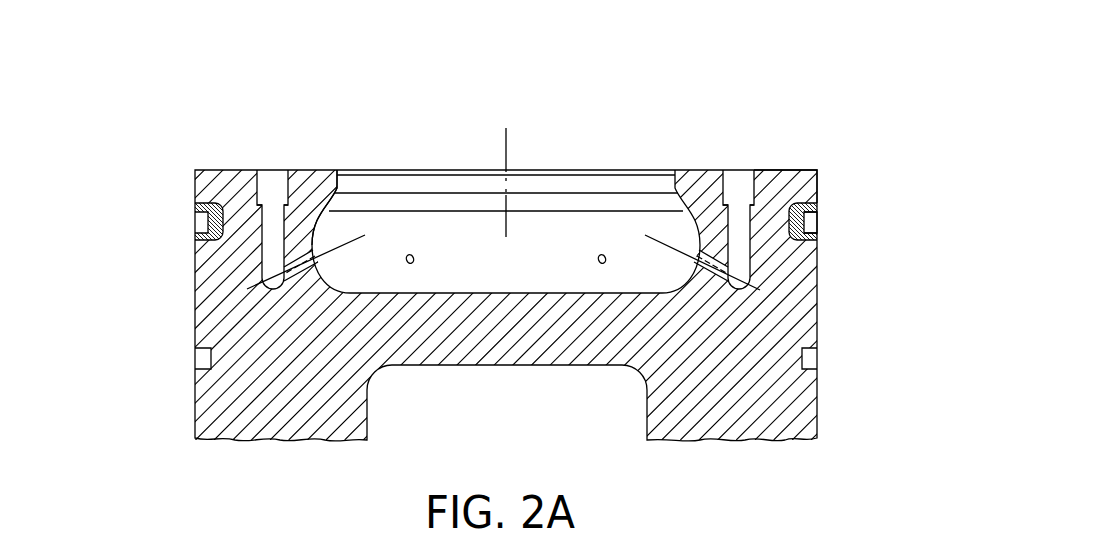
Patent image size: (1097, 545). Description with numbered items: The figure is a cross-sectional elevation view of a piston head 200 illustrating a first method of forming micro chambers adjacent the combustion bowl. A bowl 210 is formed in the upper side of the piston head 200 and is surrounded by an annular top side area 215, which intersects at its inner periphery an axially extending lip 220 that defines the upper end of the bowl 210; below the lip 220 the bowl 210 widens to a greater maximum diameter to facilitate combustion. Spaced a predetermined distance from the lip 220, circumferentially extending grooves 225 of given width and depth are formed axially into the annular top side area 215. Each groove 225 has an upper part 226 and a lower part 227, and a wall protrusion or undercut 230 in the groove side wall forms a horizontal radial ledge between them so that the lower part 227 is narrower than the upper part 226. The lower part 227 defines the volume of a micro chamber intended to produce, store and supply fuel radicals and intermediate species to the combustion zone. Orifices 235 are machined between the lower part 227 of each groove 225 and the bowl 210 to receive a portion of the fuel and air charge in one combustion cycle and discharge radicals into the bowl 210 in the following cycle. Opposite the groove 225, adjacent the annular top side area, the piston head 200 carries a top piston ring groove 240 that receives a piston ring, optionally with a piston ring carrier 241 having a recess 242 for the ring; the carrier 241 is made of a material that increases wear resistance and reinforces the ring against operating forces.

The piston head 200 is at (172, 363).
The bowl 210 is at (492, 272).
The annular top side area 215 is at (802, 170).
The axially extending lip 220 is at (338, 190).
The circumferentially extending groove 225 is at (266, 230).
The upper part of groove 226 is at (279, 185).
The lower part of groove 227 is at (738, 207).
The wall protrusion or undercut 230 is at (748, 212).
The orifice 235 is at (702, 279).
The top piston ring groove 240 is at (192, 222).
The piston ring carrier 241 is at (817, 207).
The recess 242 is at (817, 224).